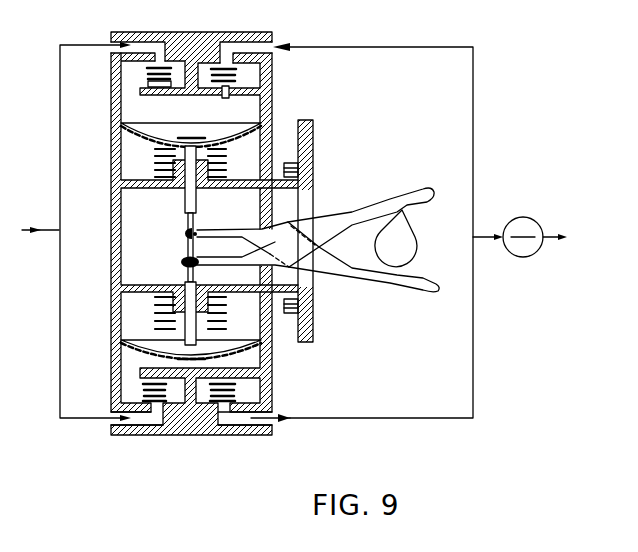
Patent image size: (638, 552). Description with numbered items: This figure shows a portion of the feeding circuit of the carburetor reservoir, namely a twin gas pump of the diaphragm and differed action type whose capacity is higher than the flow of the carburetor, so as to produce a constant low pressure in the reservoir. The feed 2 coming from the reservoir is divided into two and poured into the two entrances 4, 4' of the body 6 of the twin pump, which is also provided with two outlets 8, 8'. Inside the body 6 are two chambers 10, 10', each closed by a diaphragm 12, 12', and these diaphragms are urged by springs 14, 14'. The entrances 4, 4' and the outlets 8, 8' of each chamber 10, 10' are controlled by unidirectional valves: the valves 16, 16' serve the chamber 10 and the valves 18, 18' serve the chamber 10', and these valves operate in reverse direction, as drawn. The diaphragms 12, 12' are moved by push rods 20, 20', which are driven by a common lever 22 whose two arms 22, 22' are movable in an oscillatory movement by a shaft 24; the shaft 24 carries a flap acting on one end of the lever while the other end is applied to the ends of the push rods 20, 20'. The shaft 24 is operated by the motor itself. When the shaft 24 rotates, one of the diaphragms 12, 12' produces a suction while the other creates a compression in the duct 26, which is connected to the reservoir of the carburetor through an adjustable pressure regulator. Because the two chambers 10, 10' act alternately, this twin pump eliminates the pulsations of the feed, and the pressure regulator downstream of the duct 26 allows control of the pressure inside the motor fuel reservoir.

The feed 2 is at (53, 231).
The entrance 4 is at (129, 34).
The entrance 4' is at (117, 438).
The body 6 is at (266, 128).
The outlet 8 is at (261, 41).
The outlet 8' is at (255, 433).
The chamber 10 is at (168, 130).
The chamber 10' is at (169, 325).
The diaphragm 12 is at (169, 142).
The diaphragm 12' is at (169, 351).
The spring 14 is at (203, 180).
The spring 14' is at (207, 313).
The unidirectional valve 16 is at (162, 47).
The unidirectional valve 16' is at (257, 88).
The unidirectional valve 18 is at (147, 427).
The unidirectional valve 18' is at (258, 392).
The push rod 20 is at (169, 214).
The push rod 20' is at (163, 313).
The common lever 22 is at (315, 220).
The lower clamp arm 22' is at (318, 269).
The shaft 24 is at (415, 252).
The duct 26 is at (484, 240).